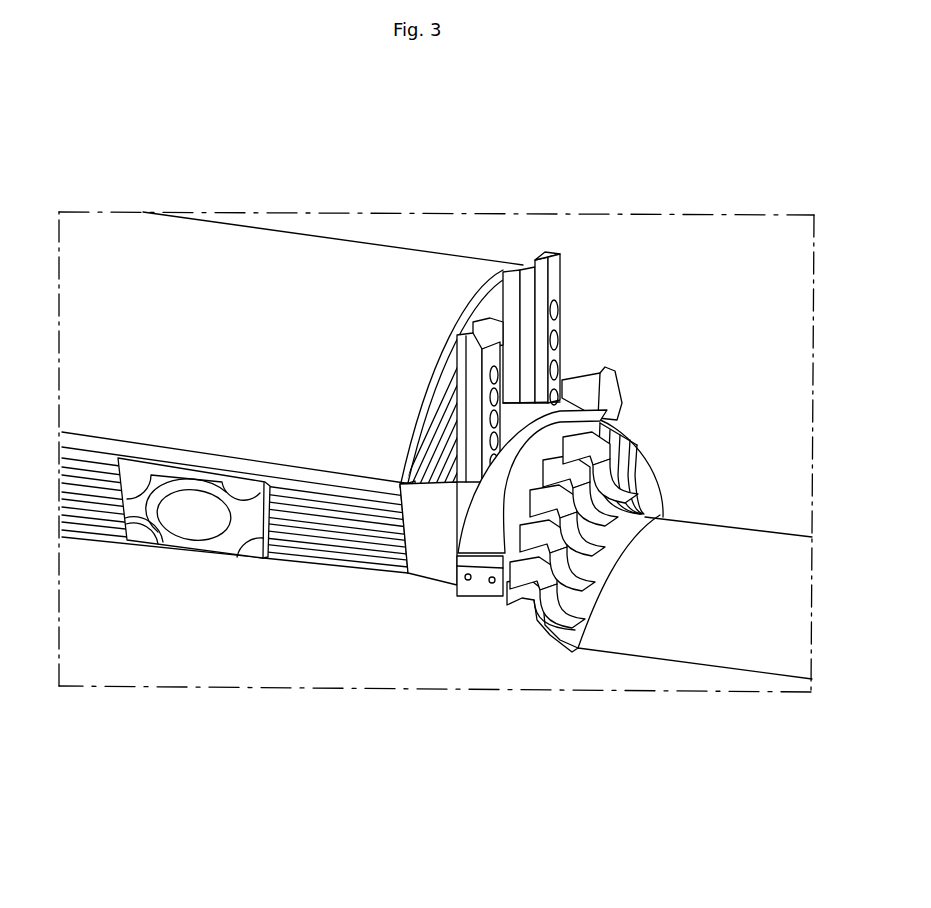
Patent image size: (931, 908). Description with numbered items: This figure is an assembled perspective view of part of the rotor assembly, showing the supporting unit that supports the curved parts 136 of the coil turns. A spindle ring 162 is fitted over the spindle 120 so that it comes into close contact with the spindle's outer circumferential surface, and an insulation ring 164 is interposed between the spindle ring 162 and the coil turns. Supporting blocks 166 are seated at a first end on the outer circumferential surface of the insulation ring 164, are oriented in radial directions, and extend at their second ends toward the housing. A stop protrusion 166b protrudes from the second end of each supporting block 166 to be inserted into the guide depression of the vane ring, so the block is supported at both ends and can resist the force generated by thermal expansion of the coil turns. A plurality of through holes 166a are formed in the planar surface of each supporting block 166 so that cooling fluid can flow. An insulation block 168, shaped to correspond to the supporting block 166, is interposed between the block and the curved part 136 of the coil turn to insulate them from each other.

The spindle 120 is at (117, 590).
The curved parts 136 is at (437, 350).
The spindle ring 162 is at (495, 533).
The insulation ring 164 is at (433, 543).
The supporting block 166 is at (473, 460).
The through holes 166a is at (556, 306).
The stop protrusion 166b is at (556, 256).
The insulation block 168 is at (455, 431).